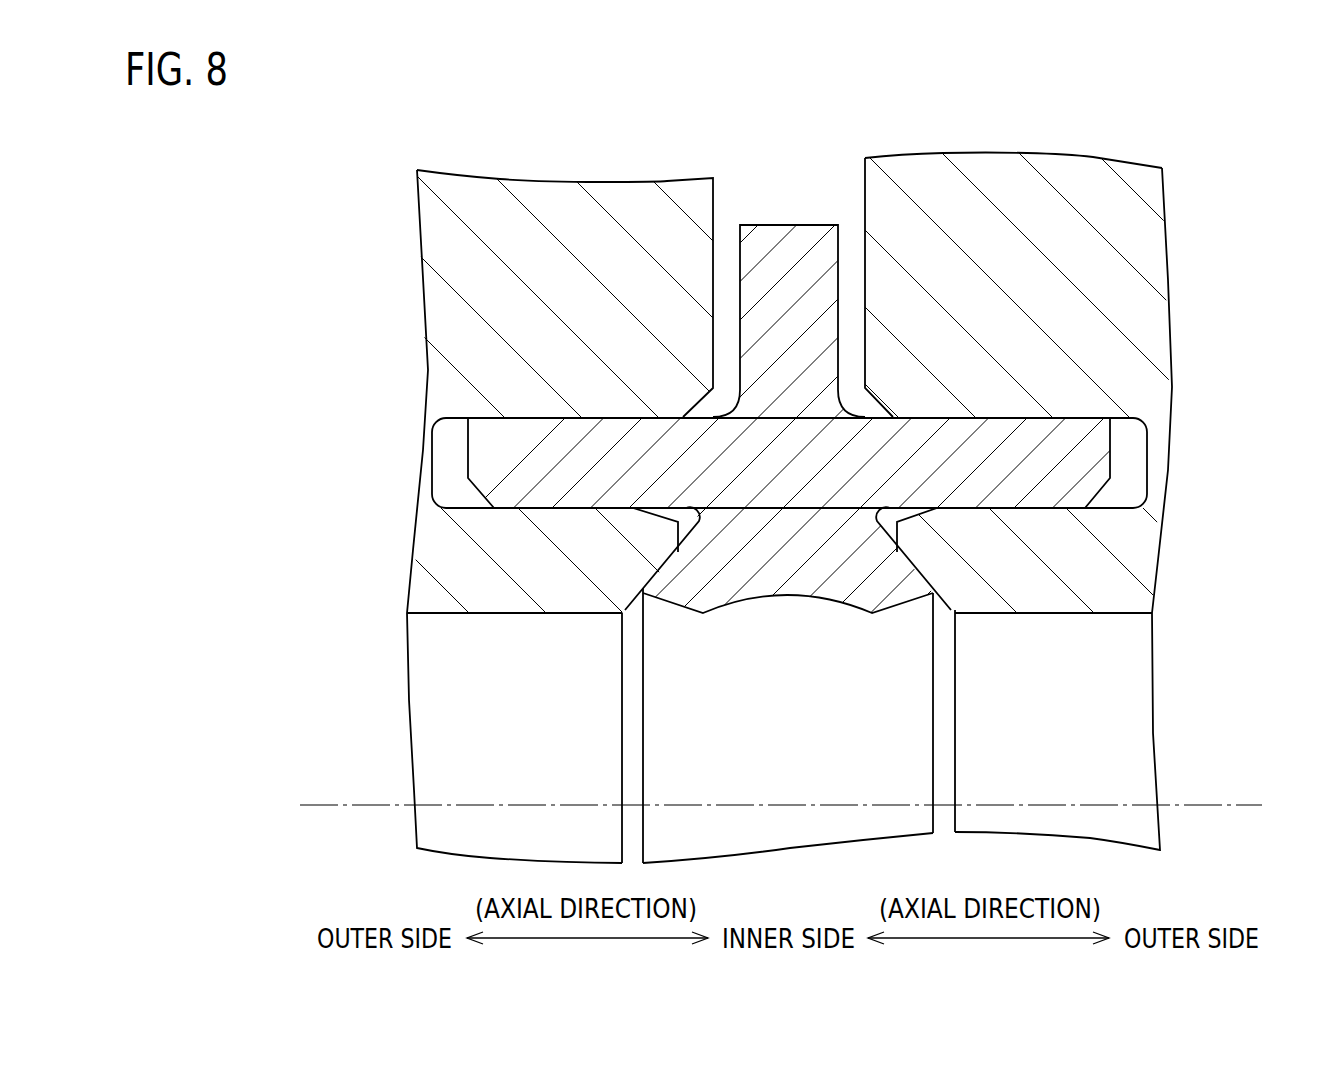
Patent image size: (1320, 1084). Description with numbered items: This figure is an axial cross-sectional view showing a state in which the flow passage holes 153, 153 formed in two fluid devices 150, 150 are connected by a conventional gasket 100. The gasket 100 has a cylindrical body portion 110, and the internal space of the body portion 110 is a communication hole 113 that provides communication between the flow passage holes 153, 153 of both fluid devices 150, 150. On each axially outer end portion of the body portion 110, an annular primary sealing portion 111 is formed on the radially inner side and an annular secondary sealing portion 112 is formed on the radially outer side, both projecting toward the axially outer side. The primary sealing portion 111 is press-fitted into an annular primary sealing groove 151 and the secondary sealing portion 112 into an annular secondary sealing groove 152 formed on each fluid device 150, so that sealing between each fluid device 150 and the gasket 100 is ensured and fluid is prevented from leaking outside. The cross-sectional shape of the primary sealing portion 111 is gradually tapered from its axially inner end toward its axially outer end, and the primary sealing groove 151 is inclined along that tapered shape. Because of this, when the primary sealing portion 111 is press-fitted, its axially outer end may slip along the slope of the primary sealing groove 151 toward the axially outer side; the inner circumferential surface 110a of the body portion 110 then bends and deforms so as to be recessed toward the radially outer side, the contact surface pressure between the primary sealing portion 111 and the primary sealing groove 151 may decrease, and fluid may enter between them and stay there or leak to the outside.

The conventional gasket 100 is at (782, 200).
The body portion 110 is at (758, 582).
The inner circumferential surface 110a is at (823, 600).
The primary sealing portion 111 is at (670, 587).
The secondary sealing portion 112 is at (498, 433).
The communication hole 113 is at (810, 780).
The fluid device 150 is at (470, 560).
The primary sealing groove 151 is at (635, 604).
The secondary sealing groove 152 is at (433, 475).
The flow passage hole 153 is at (543, 780).